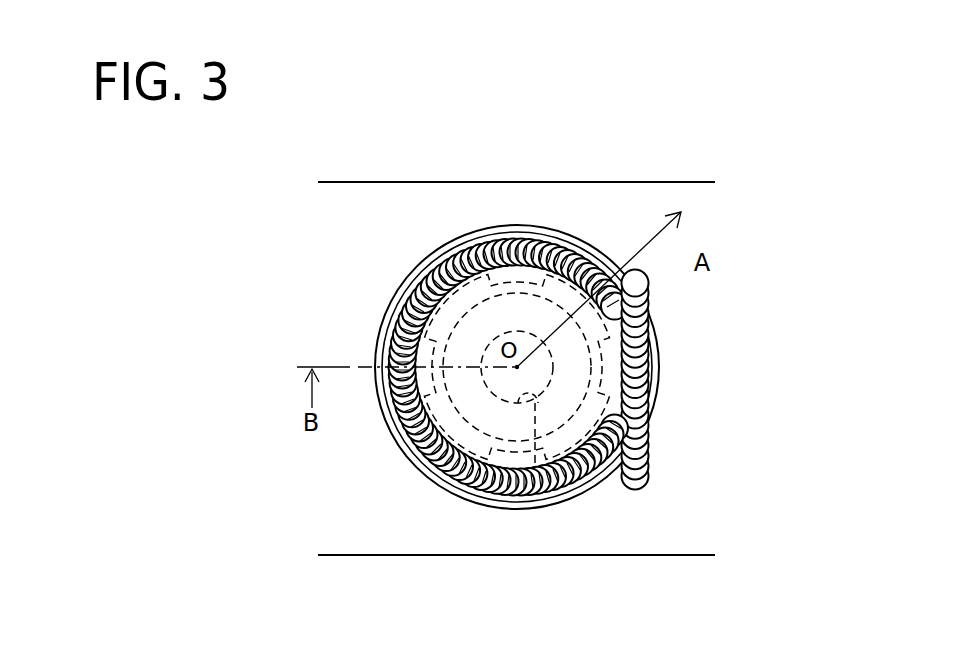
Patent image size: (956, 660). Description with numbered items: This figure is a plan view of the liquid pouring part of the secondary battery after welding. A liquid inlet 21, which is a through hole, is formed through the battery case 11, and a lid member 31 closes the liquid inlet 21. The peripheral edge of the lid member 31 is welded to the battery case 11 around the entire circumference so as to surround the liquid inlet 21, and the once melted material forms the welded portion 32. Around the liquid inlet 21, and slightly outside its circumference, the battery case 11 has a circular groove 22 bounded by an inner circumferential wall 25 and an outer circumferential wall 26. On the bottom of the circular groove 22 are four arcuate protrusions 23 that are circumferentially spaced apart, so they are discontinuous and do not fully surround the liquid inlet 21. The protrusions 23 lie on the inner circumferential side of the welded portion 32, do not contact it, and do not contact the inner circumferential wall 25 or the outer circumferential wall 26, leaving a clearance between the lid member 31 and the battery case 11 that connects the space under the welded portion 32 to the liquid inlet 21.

The battery case 11 is at (386, 182).
The liquid inlet 21 is at (543, 480).
The circular groove 22 is at (523, 268).
The protrusion 23 is at (519, 374).
The inner circumferential wall 25 is at (516, 442).
The outer circumferential wall 26 is at (505, 484).
The lid member 31 is at (505, 282).
The welded portion 32 is at (408, 318).